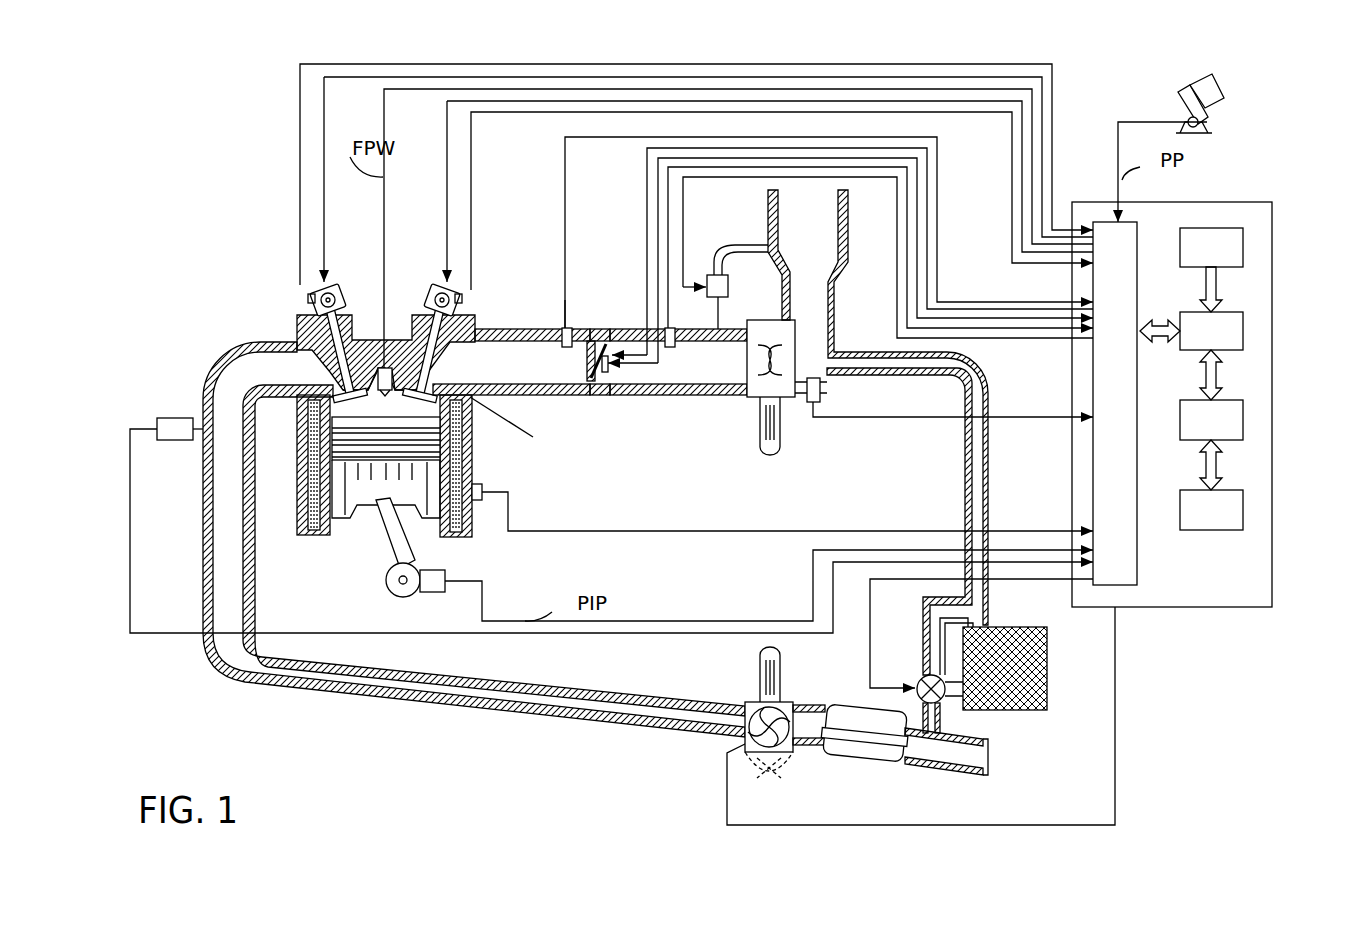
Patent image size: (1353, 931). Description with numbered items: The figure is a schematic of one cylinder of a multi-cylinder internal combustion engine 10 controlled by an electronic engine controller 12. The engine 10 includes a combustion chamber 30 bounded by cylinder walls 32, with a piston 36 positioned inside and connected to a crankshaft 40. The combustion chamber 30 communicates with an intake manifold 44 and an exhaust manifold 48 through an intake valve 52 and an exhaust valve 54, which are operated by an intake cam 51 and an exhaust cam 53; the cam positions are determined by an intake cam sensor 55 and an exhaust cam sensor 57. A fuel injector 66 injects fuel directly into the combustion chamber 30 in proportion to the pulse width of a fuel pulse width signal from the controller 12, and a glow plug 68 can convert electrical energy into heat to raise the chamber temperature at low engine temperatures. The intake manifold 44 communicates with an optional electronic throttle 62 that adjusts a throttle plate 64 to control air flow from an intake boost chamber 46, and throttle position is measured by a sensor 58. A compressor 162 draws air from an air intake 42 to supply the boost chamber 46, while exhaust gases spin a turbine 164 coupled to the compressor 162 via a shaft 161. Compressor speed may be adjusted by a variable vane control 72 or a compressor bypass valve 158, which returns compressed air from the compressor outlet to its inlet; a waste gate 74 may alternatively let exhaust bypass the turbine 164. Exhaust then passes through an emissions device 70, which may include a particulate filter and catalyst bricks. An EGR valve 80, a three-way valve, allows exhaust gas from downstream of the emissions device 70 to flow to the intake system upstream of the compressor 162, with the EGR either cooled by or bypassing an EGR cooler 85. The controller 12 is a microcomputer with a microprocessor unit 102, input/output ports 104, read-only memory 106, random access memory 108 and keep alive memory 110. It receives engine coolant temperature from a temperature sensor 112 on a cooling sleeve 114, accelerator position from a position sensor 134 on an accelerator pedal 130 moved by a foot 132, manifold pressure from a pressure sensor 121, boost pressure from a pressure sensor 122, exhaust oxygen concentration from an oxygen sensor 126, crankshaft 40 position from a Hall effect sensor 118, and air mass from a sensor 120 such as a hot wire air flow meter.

The internal combustion engine 10 is at (240, 276).
The electronic engine controller 12 is at (1237, 202).
The combustion chamber 30 is at (385, 400).
The cylinder walls 32 is at (337, 523).
The piston 36 is at (372, 490).
The crankshaft 40 is at (397, 596).
The air intake 42 is at (825, 256).
The intake manifold 44 is at (530, 372).
The intake boost chamber 46 is at (696, 372).
The exhaust manifold 48 is at (283, 379).
The intake cam 51 is at (440, 284).
The intake valve 52 is at (430, 378).
The exhaust cam 53 is at (326, 284).
The exhaust valve 54 is at (333, 380).
The intake cam sensor 55 is at (456, 296).
The exhaust cam sensor 57 is at (314, 300).
The throttle position sensor 58 is at (608, 392).
The electronic throttle 62 is at (587, 330).
The throttle plate 64 is at (598, 337).
The fuel injector 66 is at (380, 367).
The glow plug 68 is at (468, 392).
The emissions device 70 is at (847, 758).
The variable vane control 72 is at (745, 740).
The waste gate 74 is at (775, 770).
The EGR valve 80 is at (920, 680).
The EGR cooler 85 is at (1048, 663).
The microprocessor unit 102 is at (1243, 325).
The input/output ports 104 is at (1140, 228).
The read-only memory 106 is at (1243, 243).
The random access memory 108 is at (1243, 415).
The keep alive memory 110 is at (1243, 505).
The temperature sensor 112 is at (483, 490).
The cooling sleeve 114 is at (310, 456).
The Hall effect sensor 118 is at (427, 592).
The air mass sensor 120 is at (822, 402).
The pressure sensor 121 is at (562, 326).
The pressure sensor 122 is at (676, 328).
The oxygen sensor 126 is at (158, 420).
The accelerator pedal 130 is at (1180, 100).
The foot 132 is at (1222, 87).
The position sensor 134 is at (1213, 131).
The compressor bypass valve 158 is at (707, 275).
The shaft 161 is at (762, 437).
The compressor 162 is at (747, 397).
The turbine 164 is at (750, 702).